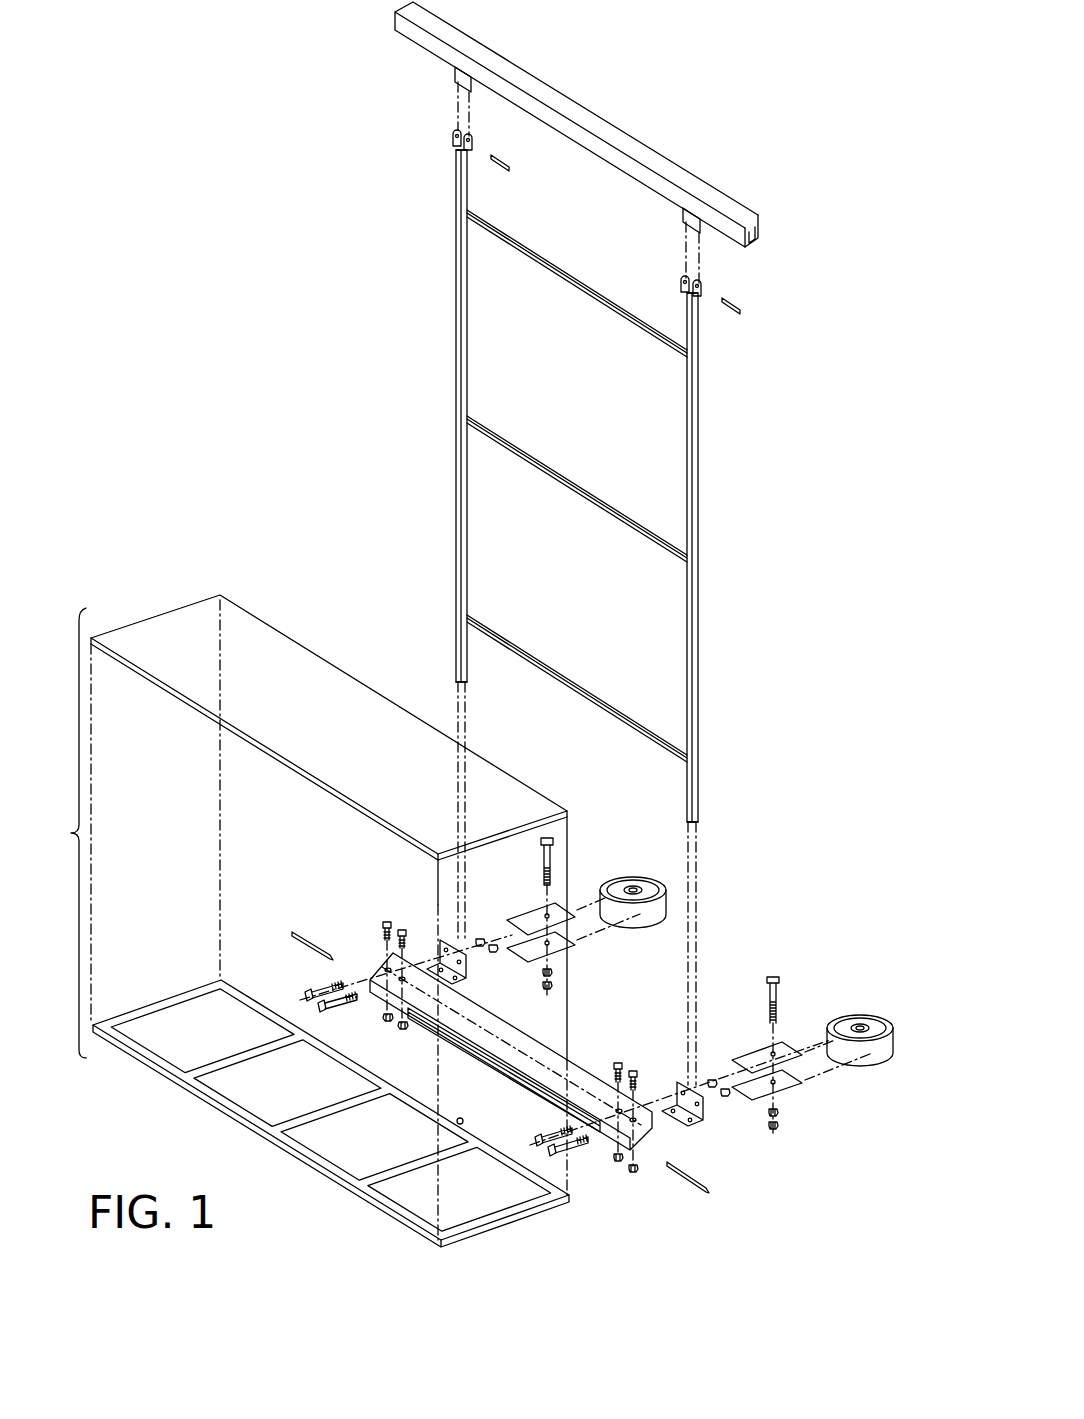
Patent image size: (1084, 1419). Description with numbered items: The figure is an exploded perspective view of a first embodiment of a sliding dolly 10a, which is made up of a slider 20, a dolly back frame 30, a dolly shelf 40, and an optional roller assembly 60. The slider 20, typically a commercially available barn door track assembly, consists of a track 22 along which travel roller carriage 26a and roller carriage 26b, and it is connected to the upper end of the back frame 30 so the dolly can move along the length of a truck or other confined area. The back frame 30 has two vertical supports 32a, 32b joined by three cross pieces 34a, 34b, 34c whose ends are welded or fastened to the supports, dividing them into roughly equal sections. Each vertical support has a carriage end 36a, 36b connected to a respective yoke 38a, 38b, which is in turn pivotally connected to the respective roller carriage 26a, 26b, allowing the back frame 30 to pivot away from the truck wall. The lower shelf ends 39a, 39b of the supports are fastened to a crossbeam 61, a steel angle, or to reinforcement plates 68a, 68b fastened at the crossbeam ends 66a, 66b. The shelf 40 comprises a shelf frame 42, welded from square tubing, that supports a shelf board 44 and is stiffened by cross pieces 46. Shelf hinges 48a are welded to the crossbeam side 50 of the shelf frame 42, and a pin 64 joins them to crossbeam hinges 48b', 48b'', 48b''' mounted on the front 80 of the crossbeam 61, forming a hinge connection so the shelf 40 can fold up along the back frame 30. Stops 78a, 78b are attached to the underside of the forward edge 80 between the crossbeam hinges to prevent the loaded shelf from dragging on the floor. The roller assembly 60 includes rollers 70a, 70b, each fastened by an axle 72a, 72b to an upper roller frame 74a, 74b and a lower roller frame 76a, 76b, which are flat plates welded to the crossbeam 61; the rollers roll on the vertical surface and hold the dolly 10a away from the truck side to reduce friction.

The sliding dolly 10a is at (778, 457).
The slider 20 is at (590, 143).
The track 22 is at (736, 183).
The roller carriage 26a is at (682, 218).
The roller carriage 26b is at (455, 73).
The dolly back frame 30 is at (587, 600).
The vertical support 32a is at (738, 689).
The vertical support 32b is at (503, 545).
The cross piece 34a is at (578, 278).
The cross piece 34b is at (572, 460).
The cross piece 34c is at (558, 651).
The carriage end 36a is at (700, 337).
The carriage end 36b is at (468, 185).
The yoke 38a is at (705, 290).
The yoke 38b is at (450, 140).
The shelf end 39a is at (700, 802).
The shelf end 39b is at (468, 683).
The dolly shelf 40 is at (70, 833).
The shelf frame 42 is at (331, 1113).
The shelf board 44 is at (188, 600).
The cross piece 46 is at (225, 1060).
The shelf hinge 48a is at (305, 1003).
The crossbeam hinge 48b' is at (679, 1148).
The crossbeam hinge 48b'' is at (484, 1081).
The crossbeam hinge 48b''' is at (283, 957).
The crossbeam side 50 is at (456, 1122).
The roller assembly 60 is at (750, 1140).
The crossbeam 61 is at (565, 1045).
The pin 64 is at (298, 930).
The end of crossbeam 66a is at (658, 1085).
The end of crossbeam 66b is at (440, 950).
The reinforcement plate 68a is at (720, 1115).
The reinforcement plate 68b is at (470, 978).
The roller 70a is at (880, 1015).
The roller 70b is at (652, 876).
The axle 72a is at (769, 975).
The axle 72b is at (547, 835).
The upper roller frame 74a is at (748, 1050).
The upper roller frame 74b is at (522, 912).
The lower roller frame 76a is at (795, 1080).
The lower roller frame 76b is at (565, 942).
The stop 78a is at (537, 1126).
The stop 78b is at (390, 1018).
The front of crossbeam 80 is at (480, 1045).